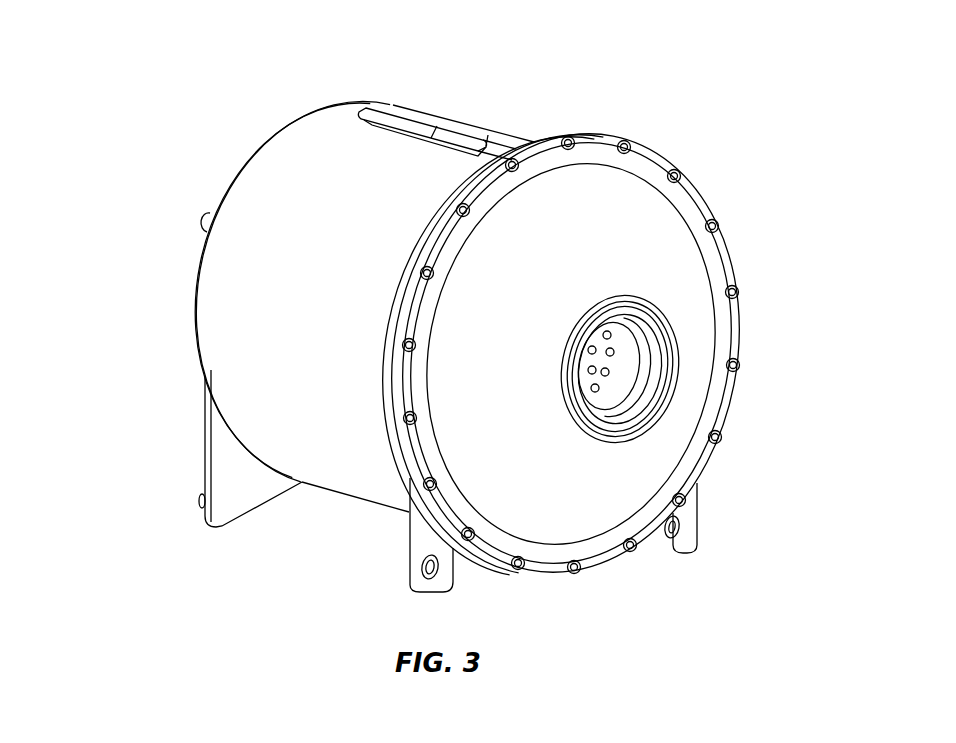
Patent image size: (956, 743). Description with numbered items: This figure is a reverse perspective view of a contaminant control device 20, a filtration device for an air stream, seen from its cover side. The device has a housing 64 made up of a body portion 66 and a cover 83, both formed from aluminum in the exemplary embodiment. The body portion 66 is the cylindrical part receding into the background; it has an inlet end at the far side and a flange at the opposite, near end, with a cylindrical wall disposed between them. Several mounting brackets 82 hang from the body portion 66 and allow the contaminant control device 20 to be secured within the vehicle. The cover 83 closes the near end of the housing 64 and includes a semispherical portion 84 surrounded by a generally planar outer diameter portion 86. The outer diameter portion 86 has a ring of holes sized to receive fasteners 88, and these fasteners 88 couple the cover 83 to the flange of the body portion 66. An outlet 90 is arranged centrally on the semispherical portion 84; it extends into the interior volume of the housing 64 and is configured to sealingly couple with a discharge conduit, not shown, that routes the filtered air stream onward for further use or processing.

The contaminant control device 20 is at (232, 75).
The housing 64 is at (512, 114).
The body portion 66 is at (212, 292).
The mounting brackets 82 is at (207, 447).
The cover 83 is at (735, 323).
The semispherical portion 84 is at (627, 212).
The outer diameter portion 86 is at (705, 245).
The fasteners 88 is at (585, 570).
The outlet 90 is at (628, 373).